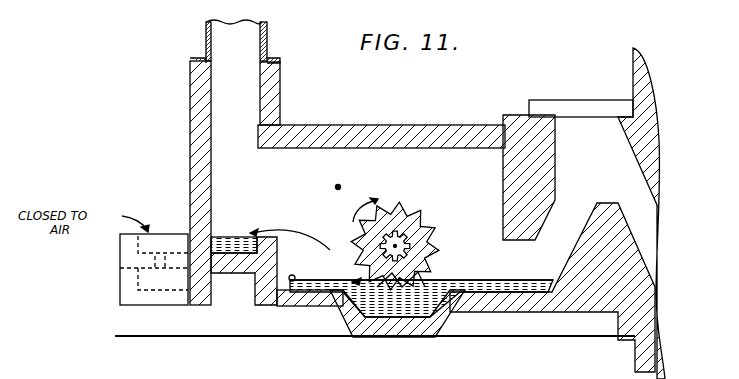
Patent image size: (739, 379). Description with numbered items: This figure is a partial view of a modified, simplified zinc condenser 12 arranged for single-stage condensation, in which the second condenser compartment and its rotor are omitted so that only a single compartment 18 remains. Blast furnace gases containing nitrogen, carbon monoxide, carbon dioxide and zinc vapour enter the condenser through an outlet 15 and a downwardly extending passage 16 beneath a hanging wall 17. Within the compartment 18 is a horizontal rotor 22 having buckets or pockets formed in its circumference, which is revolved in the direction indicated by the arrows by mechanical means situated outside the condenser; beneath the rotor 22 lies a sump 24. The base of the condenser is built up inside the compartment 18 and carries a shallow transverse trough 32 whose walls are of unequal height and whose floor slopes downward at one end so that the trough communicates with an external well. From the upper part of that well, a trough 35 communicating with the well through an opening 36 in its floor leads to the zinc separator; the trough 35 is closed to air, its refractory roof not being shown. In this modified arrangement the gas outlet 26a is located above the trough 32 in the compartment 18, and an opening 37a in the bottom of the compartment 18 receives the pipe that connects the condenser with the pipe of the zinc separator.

The condenser 12 is at (397, 117).
The outlet 15 is at (637, 197).
The downwardly extending passage 16 is at (565, 258).
The hanging wall 17 is at (515, 170).
The compartment 18 is at (317, 152).
The horizontal rotor 22 is at (400, 230).
The sump 24 is at (410, 302).
The gas outlet 26a is at (246, 95).
The shallow transverse trough 32 is at (237, 237).
The trough 35 is at (153, 240).
The opening 36 is at (160, 290).
The opening 37a is at (290, 284).